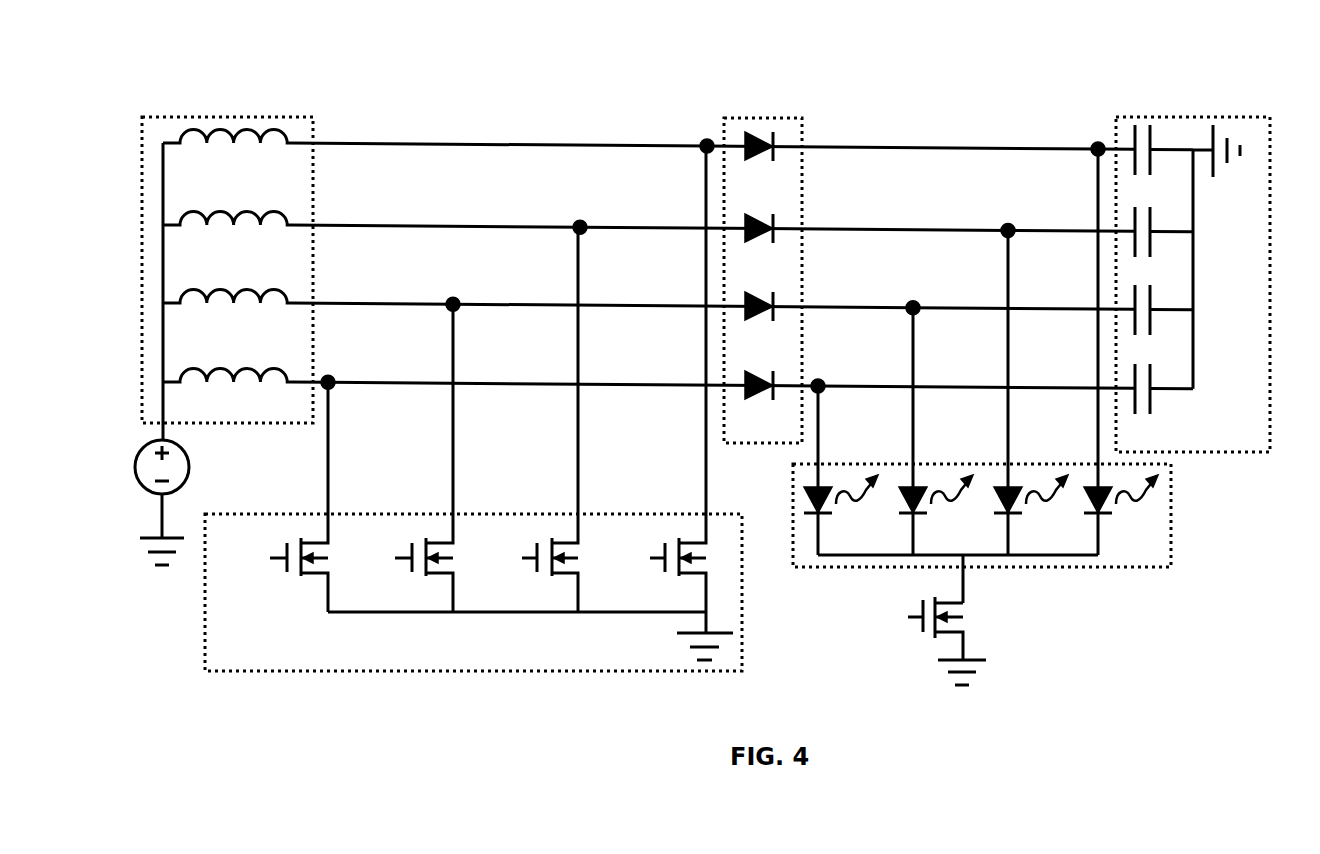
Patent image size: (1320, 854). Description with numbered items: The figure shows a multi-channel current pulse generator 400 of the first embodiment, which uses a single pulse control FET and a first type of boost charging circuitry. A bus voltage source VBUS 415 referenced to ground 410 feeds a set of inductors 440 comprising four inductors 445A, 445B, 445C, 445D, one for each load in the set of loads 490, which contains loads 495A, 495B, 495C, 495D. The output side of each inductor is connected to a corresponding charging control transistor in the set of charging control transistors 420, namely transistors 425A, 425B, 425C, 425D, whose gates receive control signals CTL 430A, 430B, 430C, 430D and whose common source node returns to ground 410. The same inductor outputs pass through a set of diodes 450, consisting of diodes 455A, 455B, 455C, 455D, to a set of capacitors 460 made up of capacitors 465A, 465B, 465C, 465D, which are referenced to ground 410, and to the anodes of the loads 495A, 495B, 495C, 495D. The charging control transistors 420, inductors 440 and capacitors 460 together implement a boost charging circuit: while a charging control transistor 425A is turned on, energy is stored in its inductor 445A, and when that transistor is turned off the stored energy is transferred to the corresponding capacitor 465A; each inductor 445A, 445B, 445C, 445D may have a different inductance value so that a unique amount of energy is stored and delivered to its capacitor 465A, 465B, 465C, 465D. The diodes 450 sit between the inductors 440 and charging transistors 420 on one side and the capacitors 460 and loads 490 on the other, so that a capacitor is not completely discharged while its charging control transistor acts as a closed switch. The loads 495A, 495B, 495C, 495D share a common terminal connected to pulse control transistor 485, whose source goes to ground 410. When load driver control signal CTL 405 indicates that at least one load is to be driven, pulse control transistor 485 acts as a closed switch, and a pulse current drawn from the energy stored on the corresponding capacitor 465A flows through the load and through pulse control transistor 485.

The multi-channel current pulse generator 400 is at (982, 77).
The load driver control signal CTL 405 is at (867, 617).
The ground 410 is at (682, 414).
The bus voltage source 415 is at (187, 488).
The set of charging control transistors 420 is at (255, 671).
The charging control transistor 425A is at (293, 497).
The charging control transistor 425B is at (418, 458).
The charging control transistor 425C is at (538, 419).
The charging control transistor 425D is at (665, 389).
The control signal 430A is at (249, 551).
The control signal 430B is at (374, 554).
The control signal 430C is at (498, 554).
The control signal 430D is at (625, 554).
The set of inductors 440 is at (203, 115).
The inductor 445A is at (649, 392).
The inductor 445B is at (649, 313).
The inductor 445C is at (649, 235).
The inductor 445D is at (649, 153).
The set of diodes 450 is at (745, 118).
The diode 455A is at (766, 403).
The diode 455B is at (766, 325).
The diode 455C is at (766, 247).
The diode 455D is at (767, 167).
The set of capacitors 460 is at (1222, 452).
The capacitor 465A is at (1157, 402).
The capacitor 465B is at (1157, 323).
The capacitor 465C is at (1157, 244).
The capacitor 465D is at (1157, 165).
The pulse control transistor 485 is at (976, 628).
The set of loads 490 is at (1110, 568).
The load 495A is at (844, 470).
The load 495B is at (939, 431).
The load 495C is at (1035, 392).
The load 495D is at (1125, 352).